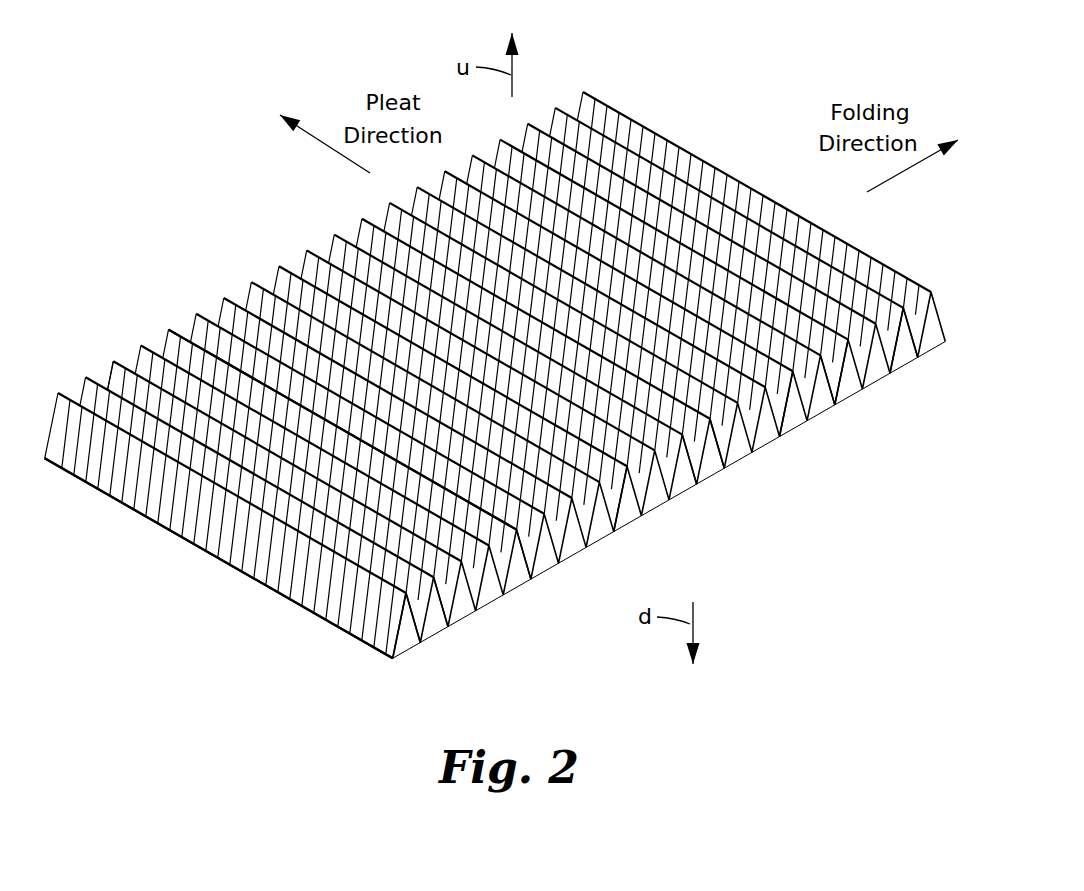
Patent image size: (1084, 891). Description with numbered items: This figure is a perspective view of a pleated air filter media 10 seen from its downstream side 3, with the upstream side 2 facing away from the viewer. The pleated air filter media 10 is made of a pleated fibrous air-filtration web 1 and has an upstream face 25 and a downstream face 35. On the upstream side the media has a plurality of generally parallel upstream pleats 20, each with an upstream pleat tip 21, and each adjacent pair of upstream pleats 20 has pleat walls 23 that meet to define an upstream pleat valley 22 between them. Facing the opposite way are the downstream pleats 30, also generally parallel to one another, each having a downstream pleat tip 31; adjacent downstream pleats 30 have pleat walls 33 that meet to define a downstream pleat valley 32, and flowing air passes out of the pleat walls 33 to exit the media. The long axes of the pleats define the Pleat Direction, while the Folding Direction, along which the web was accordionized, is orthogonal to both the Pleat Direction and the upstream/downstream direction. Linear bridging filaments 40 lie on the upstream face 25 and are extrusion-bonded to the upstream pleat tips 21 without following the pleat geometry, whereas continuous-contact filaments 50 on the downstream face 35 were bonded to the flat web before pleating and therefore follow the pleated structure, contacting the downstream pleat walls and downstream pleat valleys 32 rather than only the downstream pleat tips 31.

The pleated air filter media 10 is at (717, 62).
The pleated fibrous air-filtration web 1 is at (198, 362).
The upstream side 2 is at (792, 510).
The downstream side 3 is at (250, 247).
The upstream pleats 20 is at (725, 466).
The upstream pleat tip 21 is at (688, 488).
The upstream pleat valley 22 is at (792, 423).
The pleat walls 23 is at (851, 362).
The upstream face 25 is at (905, 362).
The downstream pleats 30 is at (467, 608).
The downstream pleat tip 31 is at (426, 562).
The downstream pleat valley 32 is at (425, 642).
The pleat walls 33 is at (624, 507).
The downstream face 35 is at (109, 369).
The linear bridging filaments 40 is at (531, 580).
The continuous-contact filaments 50 is at (103, 463).